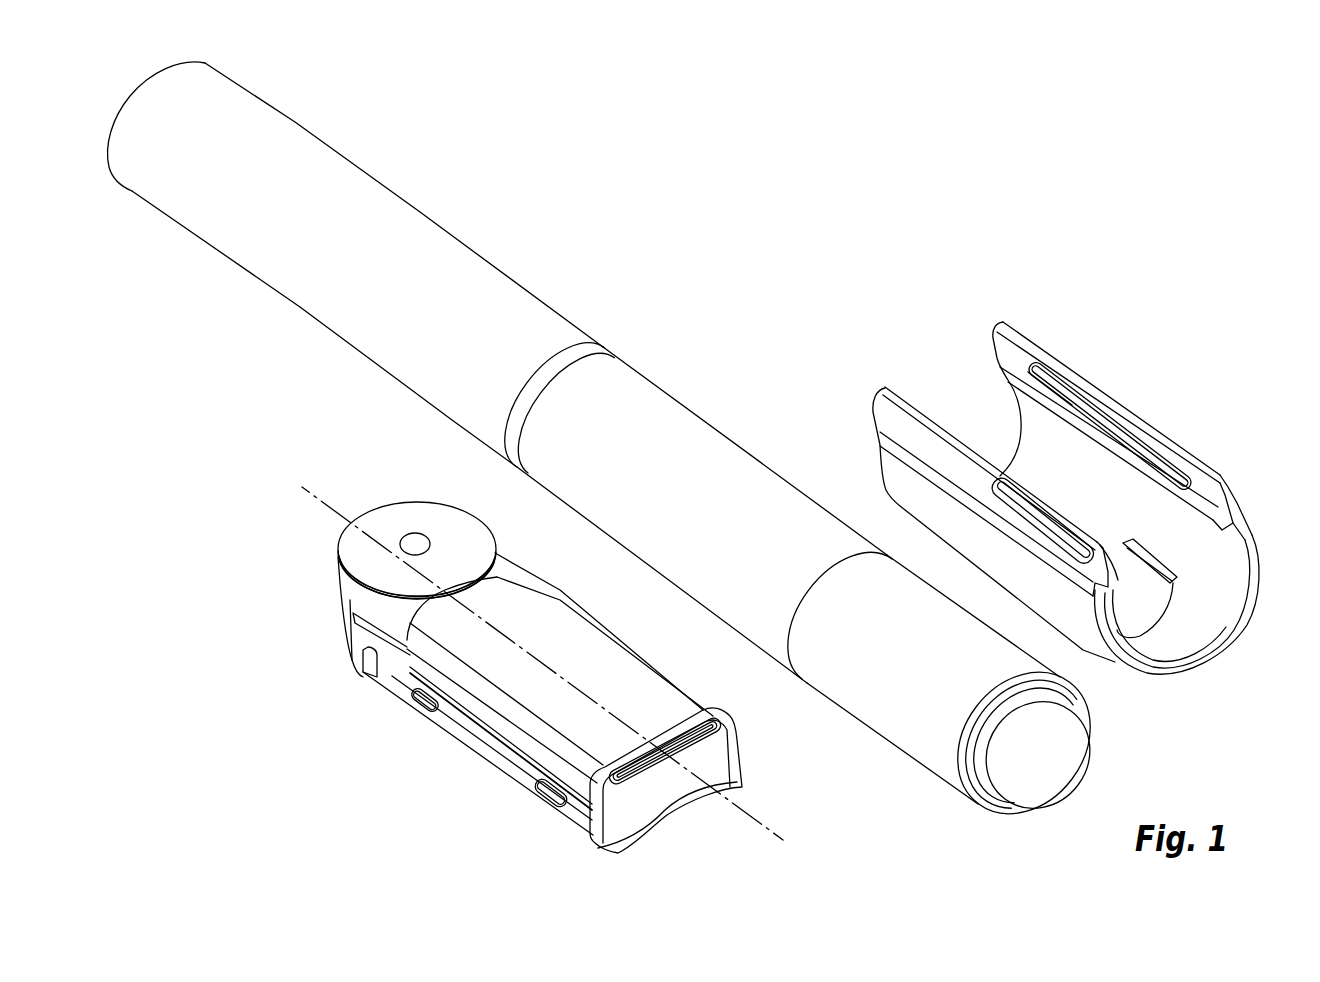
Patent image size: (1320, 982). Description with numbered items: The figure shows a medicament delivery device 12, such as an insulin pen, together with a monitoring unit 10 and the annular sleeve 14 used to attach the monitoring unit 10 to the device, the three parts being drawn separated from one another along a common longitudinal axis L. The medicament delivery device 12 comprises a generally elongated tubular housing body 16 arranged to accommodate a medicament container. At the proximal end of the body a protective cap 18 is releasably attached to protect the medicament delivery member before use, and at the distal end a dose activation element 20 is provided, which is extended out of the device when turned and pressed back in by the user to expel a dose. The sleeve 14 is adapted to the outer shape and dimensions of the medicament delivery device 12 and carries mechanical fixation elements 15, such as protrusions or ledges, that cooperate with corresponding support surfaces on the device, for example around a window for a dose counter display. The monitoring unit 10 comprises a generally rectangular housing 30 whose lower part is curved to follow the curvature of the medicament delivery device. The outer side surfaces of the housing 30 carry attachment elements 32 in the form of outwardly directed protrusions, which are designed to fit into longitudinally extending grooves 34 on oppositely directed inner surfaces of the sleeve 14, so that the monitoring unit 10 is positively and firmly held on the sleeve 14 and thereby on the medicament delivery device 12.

The monitoring unit 10 is at (272, 651).
The medicament delivery device 12 is at (277, 382).
The annular sleeve 14 is at (893, 332).
The mechanical fixation elements 15 is at (1172, 582).
The housing body 16 is at (695, 511).
The protective cap 18 is at (382, 264).
The dose activation element 20 is at (970, 711).
The housing 30 is at (480, 743).
The attachment elements 32 is at (420, 703).
The grooves 34 is at (1066, 391).
The longitudinal axis L is at (330, 510).